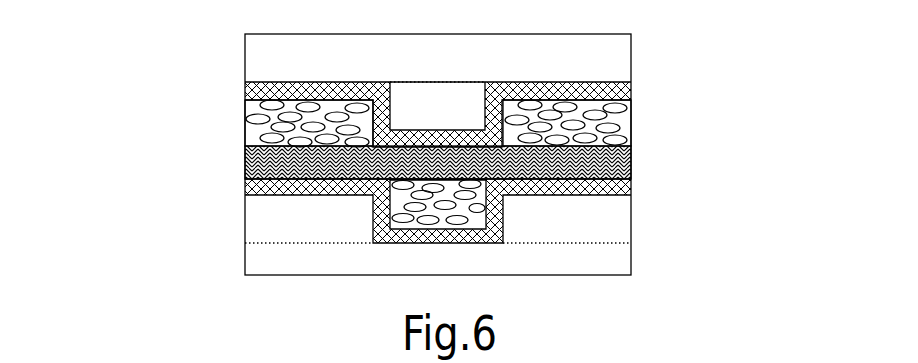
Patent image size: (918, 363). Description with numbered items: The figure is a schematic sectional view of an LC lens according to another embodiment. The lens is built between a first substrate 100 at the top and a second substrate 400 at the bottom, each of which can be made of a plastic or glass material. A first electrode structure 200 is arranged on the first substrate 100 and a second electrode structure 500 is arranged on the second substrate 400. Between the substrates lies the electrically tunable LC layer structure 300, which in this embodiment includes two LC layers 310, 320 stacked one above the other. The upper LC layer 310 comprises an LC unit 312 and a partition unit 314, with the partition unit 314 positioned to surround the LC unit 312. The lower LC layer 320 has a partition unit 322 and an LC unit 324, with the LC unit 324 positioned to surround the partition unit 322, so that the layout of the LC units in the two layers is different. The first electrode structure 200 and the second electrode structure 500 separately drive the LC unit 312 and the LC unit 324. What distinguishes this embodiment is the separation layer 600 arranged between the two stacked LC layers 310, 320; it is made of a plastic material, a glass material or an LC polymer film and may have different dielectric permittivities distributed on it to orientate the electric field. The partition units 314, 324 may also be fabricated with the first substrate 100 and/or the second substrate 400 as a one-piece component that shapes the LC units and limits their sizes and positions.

The first substrate 100 is at (618, 43).
The first electrode structure 200 is at (620, 90).
The electrically tunable LC layer structure 300 is at (138, 97).
The LC layer 310 is at (444, 115).
The LC unit 312 is at (464, 118).
The partition unit 314 is at (617, 118).
The LC layer 320 is at (384, 267).
The partition unit 322 is at (442, 203).
The LC unit 324 is at (337, 233).
The second substrate 400 is at (623, 237).
The second electrode structure 500 is at (623, 188).
The separation layer 600 is at (630, 163).